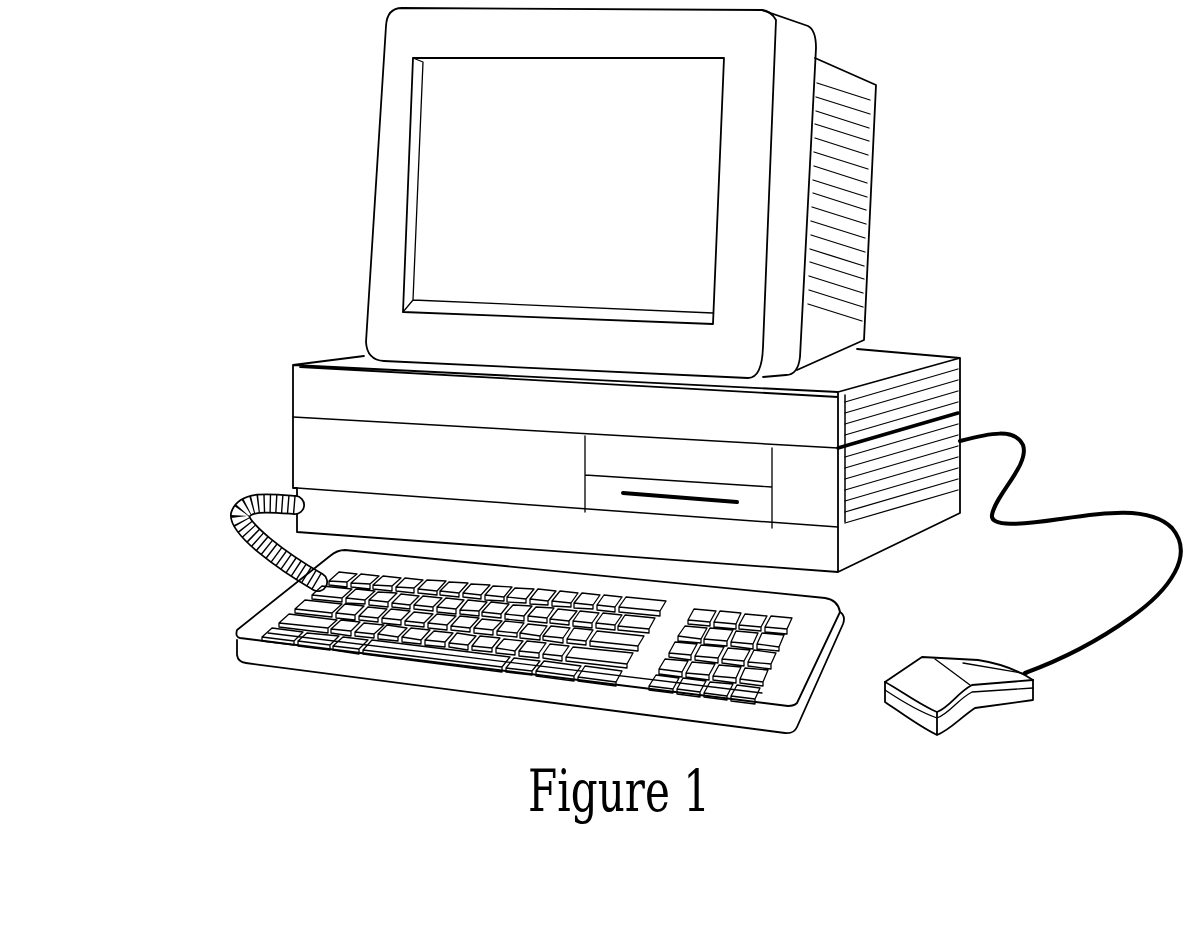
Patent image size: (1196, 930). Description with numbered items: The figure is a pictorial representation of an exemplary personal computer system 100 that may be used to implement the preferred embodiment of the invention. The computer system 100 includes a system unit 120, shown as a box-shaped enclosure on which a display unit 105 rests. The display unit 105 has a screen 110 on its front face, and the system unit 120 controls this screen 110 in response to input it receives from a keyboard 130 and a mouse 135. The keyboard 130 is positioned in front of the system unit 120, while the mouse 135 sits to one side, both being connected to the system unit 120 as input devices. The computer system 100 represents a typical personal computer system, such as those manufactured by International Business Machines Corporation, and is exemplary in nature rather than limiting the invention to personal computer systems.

The personal computer system 100 is at (229, 70).
The display unit 105 is at (793, 265).
The screen 110 is at (693, 168).
The system unit 120 is at (885, 363).
The keyboard 130 is at (287, 658).
The mouse 135 is at (990, 702).